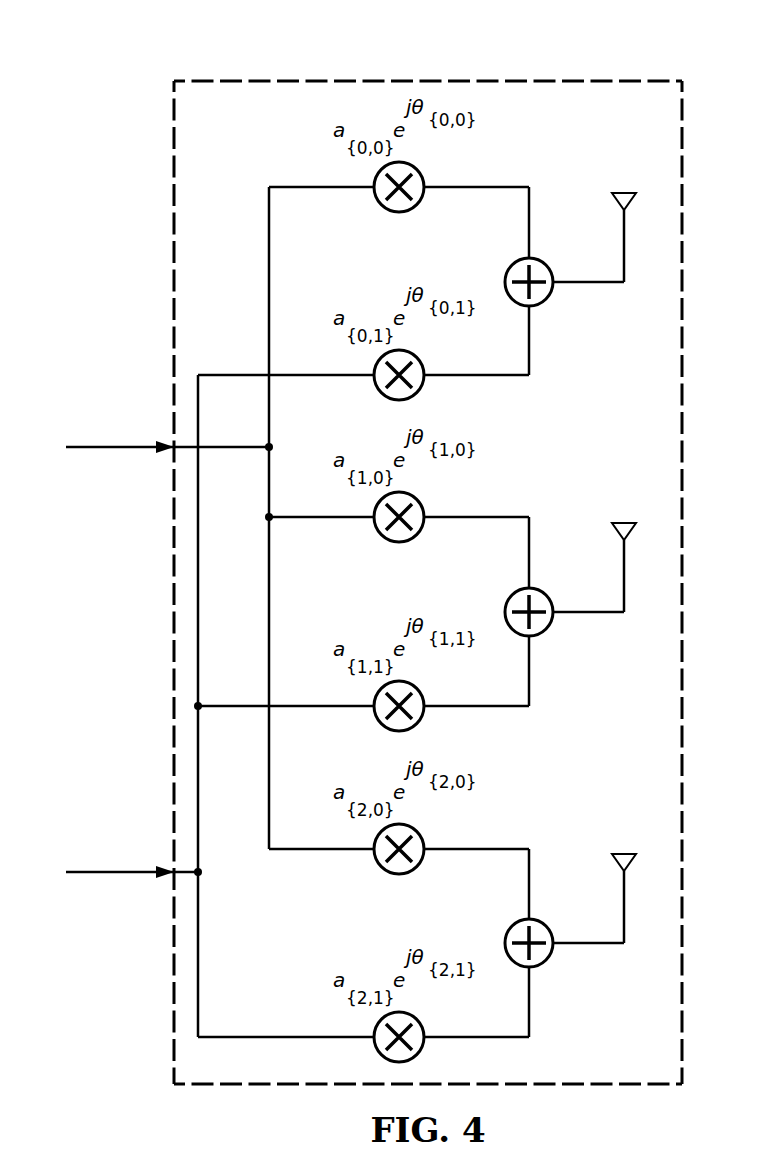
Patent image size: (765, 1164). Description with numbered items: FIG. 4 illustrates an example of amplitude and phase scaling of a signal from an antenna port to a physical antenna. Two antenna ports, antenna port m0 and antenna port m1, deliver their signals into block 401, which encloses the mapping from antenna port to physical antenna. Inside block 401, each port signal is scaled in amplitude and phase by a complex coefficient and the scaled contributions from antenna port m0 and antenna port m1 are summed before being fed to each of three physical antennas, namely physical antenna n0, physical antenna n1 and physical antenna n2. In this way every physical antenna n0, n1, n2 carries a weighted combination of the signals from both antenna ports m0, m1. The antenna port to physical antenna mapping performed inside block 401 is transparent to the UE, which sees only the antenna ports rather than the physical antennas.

The block 401 is at (515, 82).
The antenna port m0 is at (163, 436).
The antenna port m1 is at (128, 861).
The physical antenna n0 is at (609, 235).
The physical antenna n1 is at (609, 565).
The physical antenna n2 is at (609, 896).